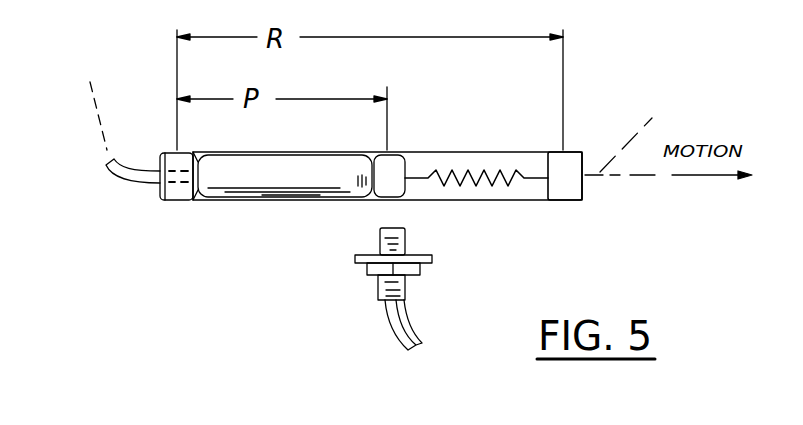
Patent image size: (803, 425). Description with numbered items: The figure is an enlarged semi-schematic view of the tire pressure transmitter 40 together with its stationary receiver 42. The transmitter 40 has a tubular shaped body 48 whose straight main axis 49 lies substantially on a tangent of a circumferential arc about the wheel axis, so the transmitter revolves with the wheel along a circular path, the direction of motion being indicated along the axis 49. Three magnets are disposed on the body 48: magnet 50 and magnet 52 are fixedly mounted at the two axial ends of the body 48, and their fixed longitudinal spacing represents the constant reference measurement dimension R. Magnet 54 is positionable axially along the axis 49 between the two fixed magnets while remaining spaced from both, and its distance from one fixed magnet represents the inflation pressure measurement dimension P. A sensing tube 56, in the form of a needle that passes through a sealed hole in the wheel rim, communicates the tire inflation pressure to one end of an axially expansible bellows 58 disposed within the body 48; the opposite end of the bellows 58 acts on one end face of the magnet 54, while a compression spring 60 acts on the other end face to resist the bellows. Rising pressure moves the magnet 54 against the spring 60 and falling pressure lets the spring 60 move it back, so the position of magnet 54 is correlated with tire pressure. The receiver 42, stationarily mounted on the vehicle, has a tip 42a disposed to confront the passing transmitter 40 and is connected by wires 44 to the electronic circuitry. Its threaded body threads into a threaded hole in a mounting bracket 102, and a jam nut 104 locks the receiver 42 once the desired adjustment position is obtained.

The transmitter 40 is at (270, 202).
The receiver 42 is at (405, 289).
The tip 42a is at (392, 228).
The wires 44 is at (397, 325).
The tubular shaped body 48 is at (515, 200).
The longitudinal axis 49 is at (645, 135).
The magnet 50 is at (178, 200).
The magnet 52 is at (567, 165).
The magnet 54 is at (388, 167).
The sensing tube 56 is at (108, 171).
The bellows 58 is at (277, 173).
The compression spring 60 is at (520, 180).
The mounting bracket 102 is at (355, 263).
The jam nut 104 is at (368, 275).